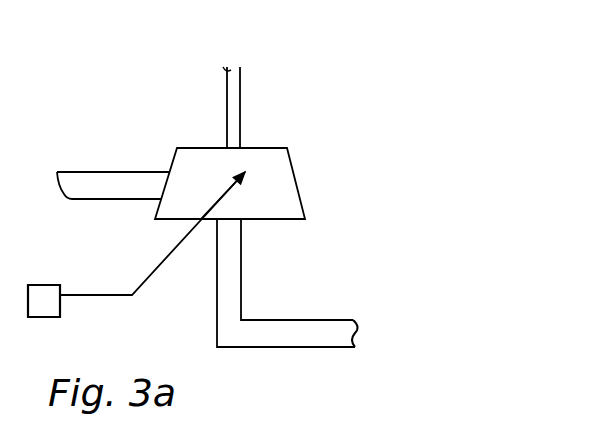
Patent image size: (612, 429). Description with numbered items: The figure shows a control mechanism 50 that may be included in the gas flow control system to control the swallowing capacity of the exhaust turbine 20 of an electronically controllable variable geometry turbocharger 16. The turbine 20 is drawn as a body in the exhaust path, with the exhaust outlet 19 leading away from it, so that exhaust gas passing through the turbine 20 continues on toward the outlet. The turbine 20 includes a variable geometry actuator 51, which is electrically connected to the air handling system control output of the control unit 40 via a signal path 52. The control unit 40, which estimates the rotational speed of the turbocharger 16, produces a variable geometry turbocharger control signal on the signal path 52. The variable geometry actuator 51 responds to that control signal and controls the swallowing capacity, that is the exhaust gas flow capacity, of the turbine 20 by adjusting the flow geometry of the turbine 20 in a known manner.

The turbocharger 16 is at (297, 43).
The exhaust outlet 19 is at (240, 105).
The exhaust turbine 20 is at (298, 178).
The control unit 40 is at (60, 316).
The control mechanism 50 is at (445, 145).
The variable geometry actuator 51 is at (220, 218).
The signal path 52 is at (70, 290).